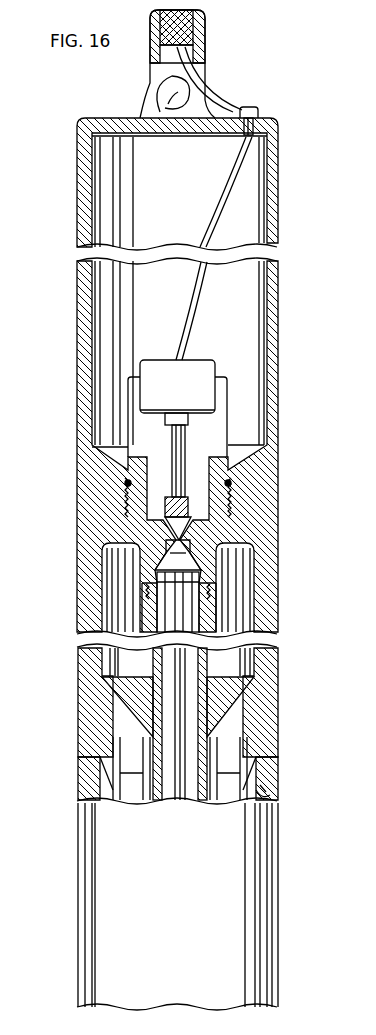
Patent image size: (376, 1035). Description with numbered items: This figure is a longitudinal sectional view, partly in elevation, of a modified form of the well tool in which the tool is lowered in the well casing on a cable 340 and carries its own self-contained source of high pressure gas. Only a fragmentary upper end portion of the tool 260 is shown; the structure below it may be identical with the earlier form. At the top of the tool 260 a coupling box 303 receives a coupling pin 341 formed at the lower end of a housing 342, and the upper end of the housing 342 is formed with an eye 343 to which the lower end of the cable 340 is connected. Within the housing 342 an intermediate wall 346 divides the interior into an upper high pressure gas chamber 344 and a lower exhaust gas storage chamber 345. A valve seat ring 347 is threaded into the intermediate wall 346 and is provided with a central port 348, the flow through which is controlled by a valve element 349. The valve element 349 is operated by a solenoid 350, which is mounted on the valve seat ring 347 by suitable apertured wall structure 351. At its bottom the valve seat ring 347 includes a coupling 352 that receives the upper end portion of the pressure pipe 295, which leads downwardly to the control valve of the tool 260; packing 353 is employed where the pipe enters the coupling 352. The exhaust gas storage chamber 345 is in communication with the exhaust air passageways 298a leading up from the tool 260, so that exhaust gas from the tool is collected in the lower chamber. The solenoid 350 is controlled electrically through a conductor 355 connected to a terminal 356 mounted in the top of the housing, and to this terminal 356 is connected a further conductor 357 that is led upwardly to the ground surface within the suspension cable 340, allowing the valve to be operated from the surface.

The cable 340 is at (200, 12).
The conductor 357 is at (207, 98).
The eye 343 is at (160, 107).
The terminal 356 is at (258, 112).
The conductor 355 is at (222, 170).
The high pressure gas chamber 344 is at (250, 312).
The solenoid 350 is at (217, 364).
The apertured wall structure 351 is at (220, 425).
The intermediate wall 346 is at (265, 507).
The valve seat ring 347 is at (190, 522).
The valve element 349 is at (173, 525).
The central port 348 is at (195, 552).
The exhaust gas storage chamber 345 is at (222, 598).
The packing 353 is at (205, 594).
The coupling 352 is at (135, 563).
The pressure pipe 295 is at (245, 620).
The housing 342 is at (280, 690).
The coupling pin 341 is at (263, 783).
The exhaust air passageways 298a is at (82, 795).
The coupling box 303 is at (280, 793).
The tool 260 is at (265, 825).